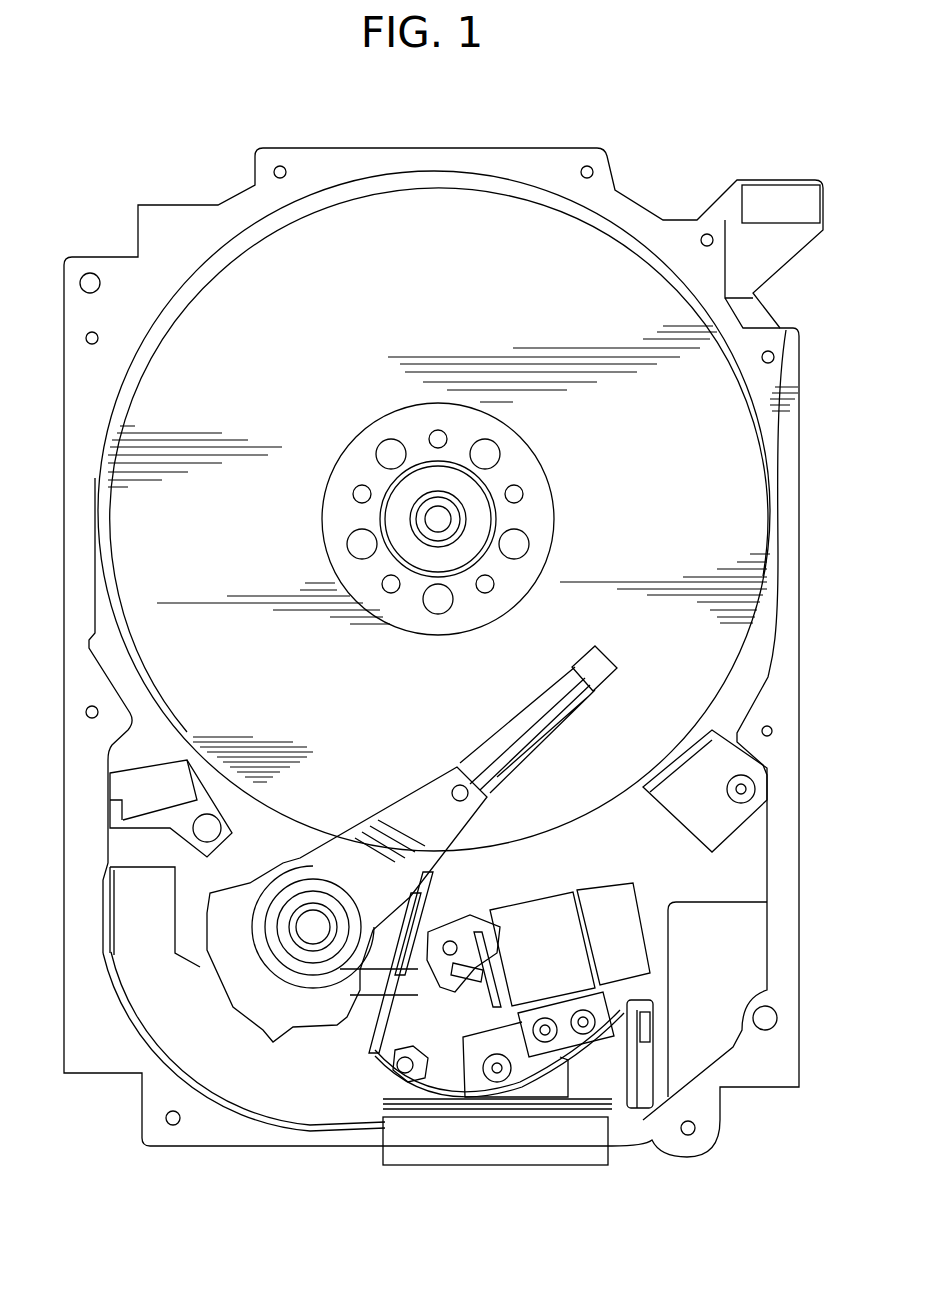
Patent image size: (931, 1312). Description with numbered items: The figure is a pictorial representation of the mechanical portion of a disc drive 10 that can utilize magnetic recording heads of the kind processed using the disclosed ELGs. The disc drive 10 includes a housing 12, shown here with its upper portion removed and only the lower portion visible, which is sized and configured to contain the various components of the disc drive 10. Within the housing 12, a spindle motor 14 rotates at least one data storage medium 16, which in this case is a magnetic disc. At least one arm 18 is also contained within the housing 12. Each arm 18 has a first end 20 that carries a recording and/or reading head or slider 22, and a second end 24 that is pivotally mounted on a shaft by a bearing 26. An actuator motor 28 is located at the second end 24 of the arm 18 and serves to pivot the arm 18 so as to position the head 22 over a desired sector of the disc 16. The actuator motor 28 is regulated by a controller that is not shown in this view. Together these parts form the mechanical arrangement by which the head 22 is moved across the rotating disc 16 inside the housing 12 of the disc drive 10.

The disc drive 10 is at (118, 193).
The housing 12 is at (566, 153).
The spindle motor 14 is at (430, 520).
The data storage medium 16 is at (327, 317).
The arm 18 is at (427, 807).
The first end 20 is at (540, 702).
The head 22 is at (593, 663).
The second end 24 is at (333, 863).
The bearing 26 is at (303, 918).
The actuator motor 28 is at (182, 1039).